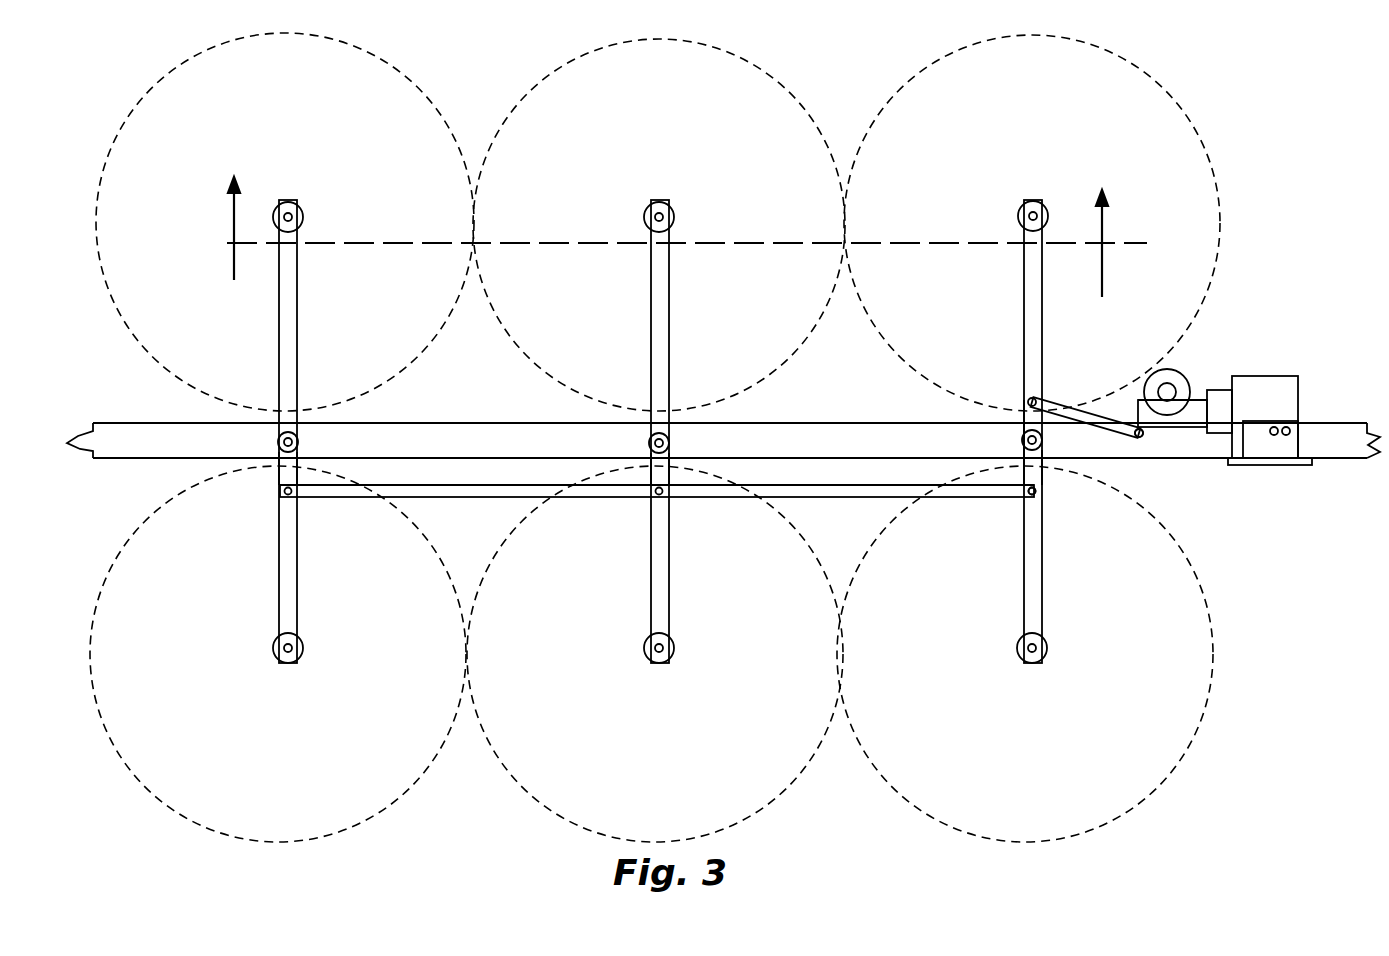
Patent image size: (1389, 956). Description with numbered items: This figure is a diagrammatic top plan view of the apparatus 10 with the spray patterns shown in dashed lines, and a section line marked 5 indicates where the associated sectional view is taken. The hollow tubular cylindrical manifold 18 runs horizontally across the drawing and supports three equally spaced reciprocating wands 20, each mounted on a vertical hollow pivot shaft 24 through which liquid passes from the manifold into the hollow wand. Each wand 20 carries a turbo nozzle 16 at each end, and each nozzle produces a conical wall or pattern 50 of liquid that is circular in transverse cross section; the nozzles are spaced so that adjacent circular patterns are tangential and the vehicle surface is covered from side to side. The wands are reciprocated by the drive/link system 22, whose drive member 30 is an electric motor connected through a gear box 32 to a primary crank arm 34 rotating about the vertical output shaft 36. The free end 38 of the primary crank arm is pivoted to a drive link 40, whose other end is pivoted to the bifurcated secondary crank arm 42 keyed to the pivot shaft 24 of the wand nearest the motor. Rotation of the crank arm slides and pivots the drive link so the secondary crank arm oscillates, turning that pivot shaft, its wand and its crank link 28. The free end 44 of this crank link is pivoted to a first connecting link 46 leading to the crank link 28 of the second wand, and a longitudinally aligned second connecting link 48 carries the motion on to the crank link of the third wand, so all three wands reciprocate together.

The section line 5- 5 is at (683, 214).
The apparatus 10 is at (1265, 263).
The turbo nozzle 16 is at (673, 218).
The manifold 18 is at (1310, 435).
The reciprocating wand 20 is at (292, 357).
The drive/link system 22 is at (962, 520).
The pivot shaft 24 is at (282, 449).
The crank link 28 is at (293, 475).
The drive member 30 is at (1250, 392).
The gear box 32 is at (1190, 420).
The primary crank arm 34 is at (1150, 435).
The output shaft 36 is at (1167, 392).
The free end 38 is at (1137, 437).
The drive link 40 is at (1085, 420).
The secondary crank arm 42 is at (1022, 412).
The free end 44 is at (1030, 494).
The first connecting link 46 is at (803, 490).
The second connecting link 48 is at (450, 496).
The conical wall or pattern 50 is at (782, 82).